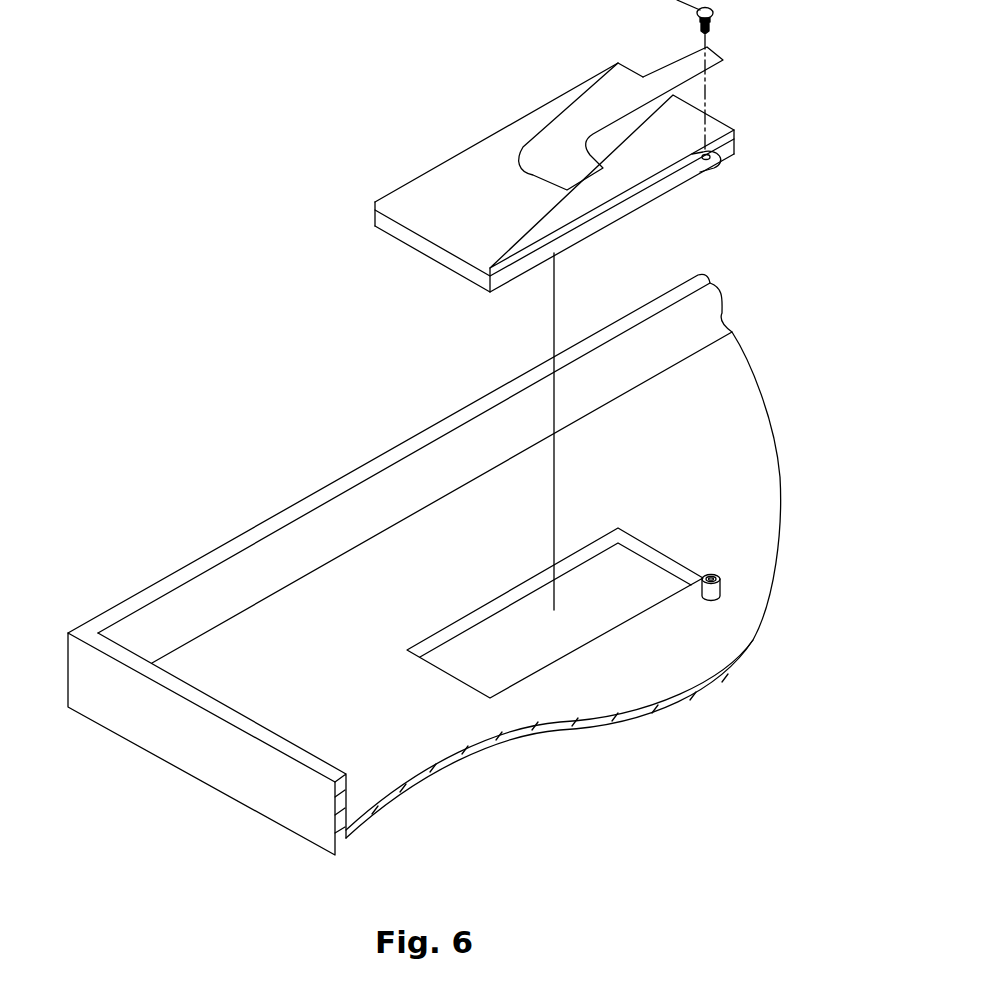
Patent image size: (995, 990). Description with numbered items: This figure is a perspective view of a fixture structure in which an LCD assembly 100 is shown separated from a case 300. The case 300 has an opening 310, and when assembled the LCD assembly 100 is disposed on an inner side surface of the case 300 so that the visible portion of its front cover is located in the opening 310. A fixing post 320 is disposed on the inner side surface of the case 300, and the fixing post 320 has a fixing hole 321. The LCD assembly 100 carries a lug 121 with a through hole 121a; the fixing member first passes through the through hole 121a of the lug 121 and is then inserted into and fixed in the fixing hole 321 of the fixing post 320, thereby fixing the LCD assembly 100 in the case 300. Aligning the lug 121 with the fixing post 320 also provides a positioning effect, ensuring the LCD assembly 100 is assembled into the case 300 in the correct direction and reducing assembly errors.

The LCD assembly 100 is at (468, 118).
The lug 121 is at (717, 167).
The through hole 121a is at (712, 152).
The case 300 is at (358, 585).
The opening 310 is at (478, 667).
The fixing post 320 is at (707, 597).
The fixing hole 321 is at (713, 576).